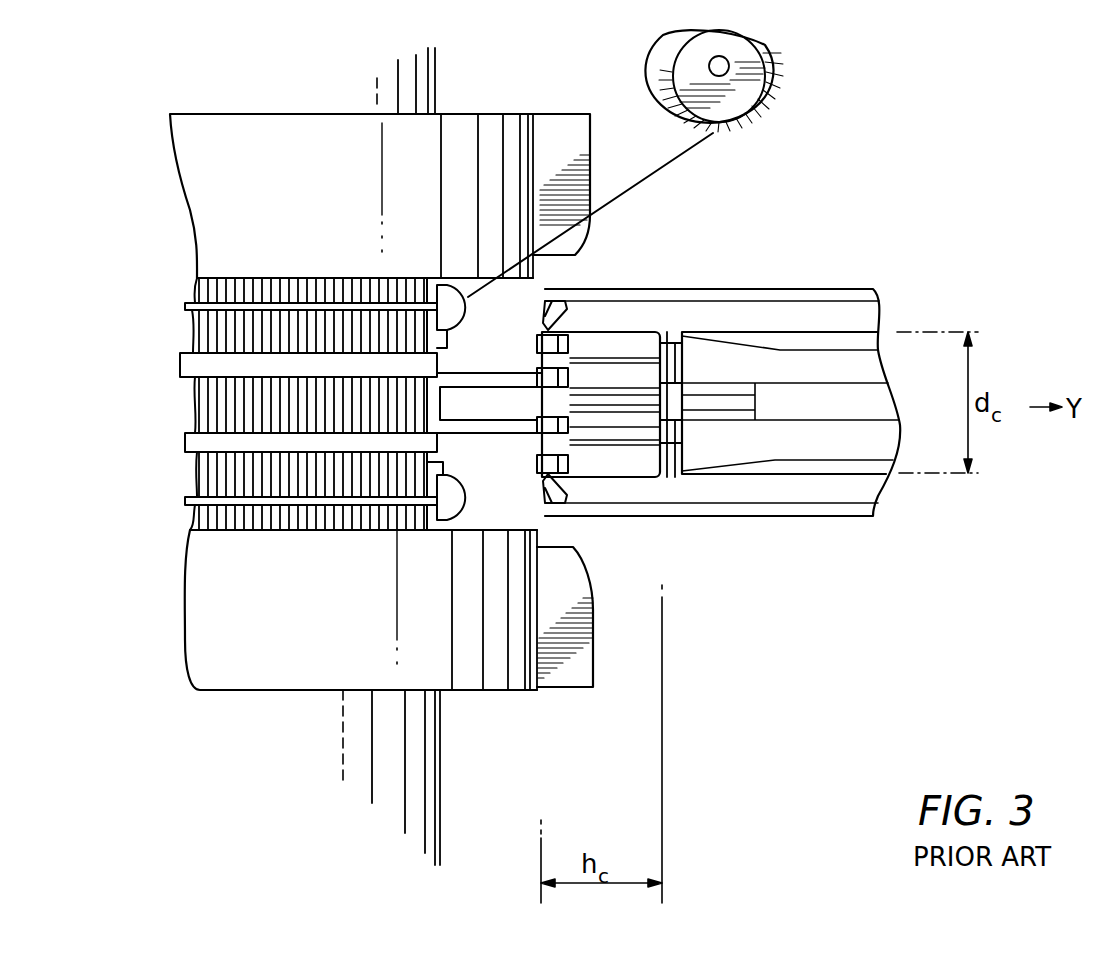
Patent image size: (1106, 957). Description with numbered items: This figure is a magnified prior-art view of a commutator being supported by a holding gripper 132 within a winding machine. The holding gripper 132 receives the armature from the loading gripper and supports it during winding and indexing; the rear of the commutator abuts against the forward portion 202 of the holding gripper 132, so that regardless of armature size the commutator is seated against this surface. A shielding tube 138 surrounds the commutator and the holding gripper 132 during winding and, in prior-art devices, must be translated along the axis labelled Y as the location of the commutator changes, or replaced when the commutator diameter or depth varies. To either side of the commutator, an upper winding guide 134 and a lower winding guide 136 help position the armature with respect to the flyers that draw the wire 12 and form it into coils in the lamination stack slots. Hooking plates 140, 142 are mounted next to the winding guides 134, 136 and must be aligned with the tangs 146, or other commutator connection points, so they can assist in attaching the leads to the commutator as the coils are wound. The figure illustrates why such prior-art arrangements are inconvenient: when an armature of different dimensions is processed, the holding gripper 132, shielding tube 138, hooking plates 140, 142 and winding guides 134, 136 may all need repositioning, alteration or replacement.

The wire 12 is at (708, 133).
The winding guide 134 is at (514, 113).
The hooking plate 140 is at (590, 137).
The tangs 146 is at (566, 372).
The shielding tube 138 is at (806, 289).
The forward portion of holding gripper 202 is at (672, 453).
The holding gripper 132 is at (745, 450).
The hooking plate 142 is at (595, 663).
The winding guide 136 is at (510, 688).